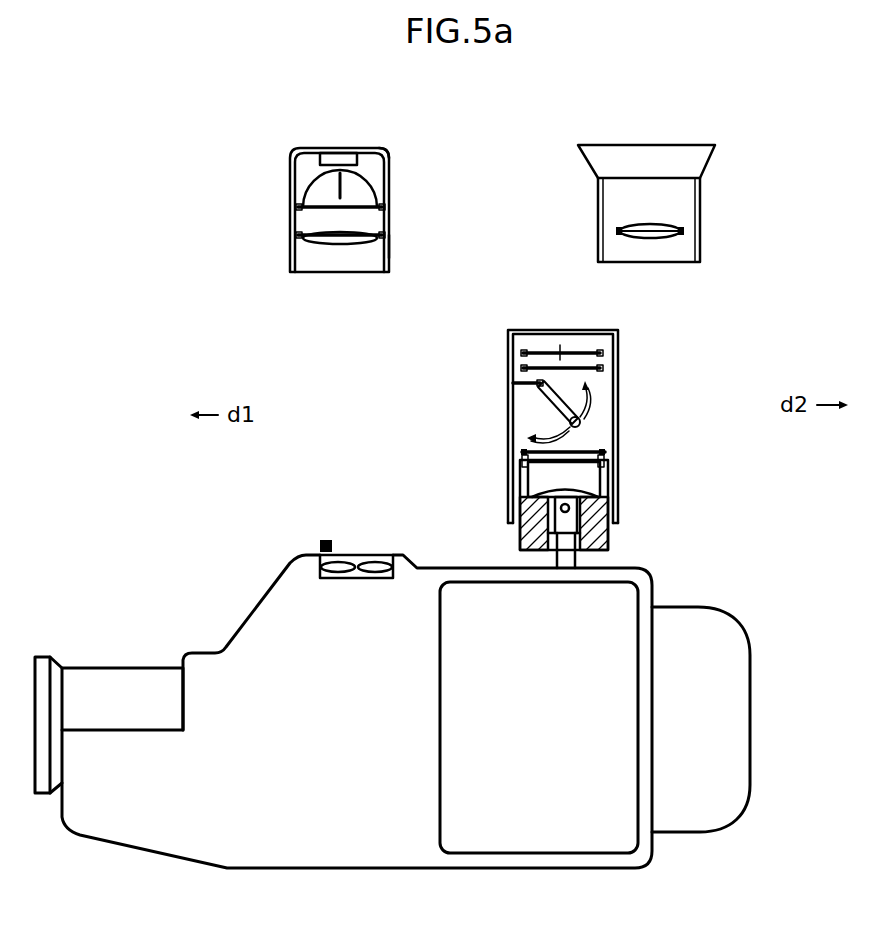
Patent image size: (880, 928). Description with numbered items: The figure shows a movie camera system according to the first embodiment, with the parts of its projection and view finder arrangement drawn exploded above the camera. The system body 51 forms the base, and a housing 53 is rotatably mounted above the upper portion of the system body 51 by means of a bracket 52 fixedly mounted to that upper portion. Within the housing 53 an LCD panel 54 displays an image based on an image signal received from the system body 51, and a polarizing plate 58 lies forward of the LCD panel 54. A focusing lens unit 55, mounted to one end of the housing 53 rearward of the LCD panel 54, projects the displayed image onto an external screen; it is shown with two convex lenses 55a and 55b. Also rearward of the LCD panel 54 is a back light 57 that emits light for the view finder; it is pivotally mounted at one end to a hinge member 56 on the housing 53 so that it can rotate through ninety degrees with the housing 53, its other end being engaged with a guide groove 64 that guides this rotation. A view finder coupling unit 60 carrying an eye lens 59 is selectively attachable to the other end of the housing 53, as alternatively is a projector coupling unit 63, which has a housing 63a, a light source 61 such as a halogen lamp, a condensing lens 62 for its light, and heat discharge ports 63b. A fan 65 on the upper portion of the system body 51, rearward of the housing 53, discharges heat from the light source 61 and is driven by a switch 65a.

The system body 51 is at (735, 638).
The bracket 52 is at (567, 563).
The housing 53 is at (618, 423).
The LCD panel 54 is at (617, 362).
The focusing lens unit 55 is at (520, 532).
The convex lens 55a is at (540, 482).
The convex lens 55b is at (610, 532).
The hinge member 56 is at (538, 382).
The back light 57 is at (545, 408).
The polarizing plate 58 is at (560, 352).
The eye lens 59 is at (672, 227).
The view finder coupling unit 60 is at (665, 143).
The light source 61 is at (317, 197).
The condensing lens 62 is at (332, 242).
The projector coupling unit 63 is at (360, 147).
The housing 63a is at (388, 160).
The heat discharge ports 63b is at (386, 258).
The guide groove 64 is at (592, 397).
The fan 65 is at (380, 555).
The switch 65a is at (325, 540).